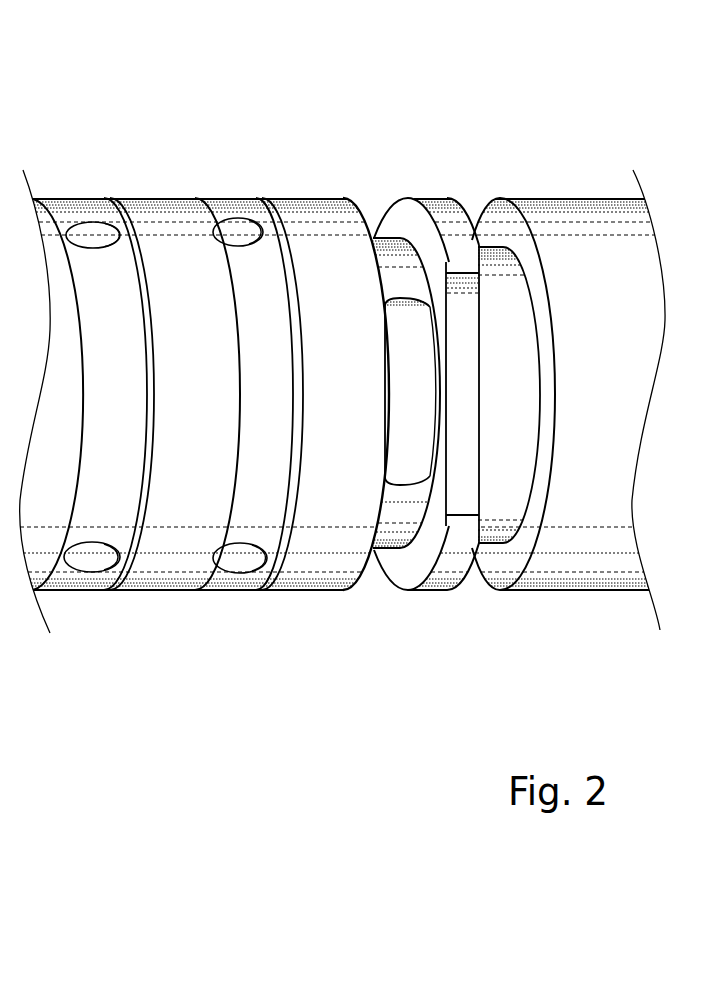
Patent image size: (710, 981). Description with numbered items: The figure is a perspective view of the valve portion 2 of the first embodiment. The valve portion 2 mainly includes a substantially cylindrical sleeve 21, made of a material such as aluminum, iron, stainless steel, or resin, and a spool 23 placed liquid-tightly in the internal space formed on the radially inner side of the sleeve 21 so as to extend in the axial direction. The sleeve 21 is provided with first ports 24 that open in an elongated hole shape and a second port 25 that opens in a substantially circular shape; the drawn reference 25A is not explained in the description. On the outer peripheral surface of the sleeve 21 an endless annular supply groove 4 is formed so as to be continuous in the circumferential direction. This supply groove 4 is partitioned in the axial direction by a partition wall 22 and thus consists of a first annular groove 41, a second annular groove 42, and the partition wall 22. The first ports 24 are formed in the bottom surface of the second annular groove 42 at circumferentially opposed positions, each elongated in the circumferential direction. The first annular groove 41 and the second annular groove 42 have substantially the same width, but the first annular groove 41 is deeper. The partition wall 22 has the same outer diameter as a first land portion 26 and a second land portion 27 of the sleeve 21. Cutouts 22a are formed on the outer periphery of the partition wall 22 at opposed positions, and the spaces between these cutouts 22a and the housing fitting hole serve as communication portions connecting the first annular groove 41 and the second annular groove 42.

The valve portion 2 is at (356, 365).
The sleeve 21 is at (594, 178).
The partition wall 22 is at (448, 563).
The cutouts 22a is at (460, 487).
The spool 23 is at (345, 588).
The first ports 24 is at (407, 477).
The second port 25 is at (260, 245).
The slotted ring 25A is at (216, 196).
The first land portion 26 is at (615, 565).
The second land portion 27 is at (317, 563).
The supply groove 4 is at (461, 324).
The first annular groove 41 is at (508, 350).
The second annular groove 42 is at (374, 196).